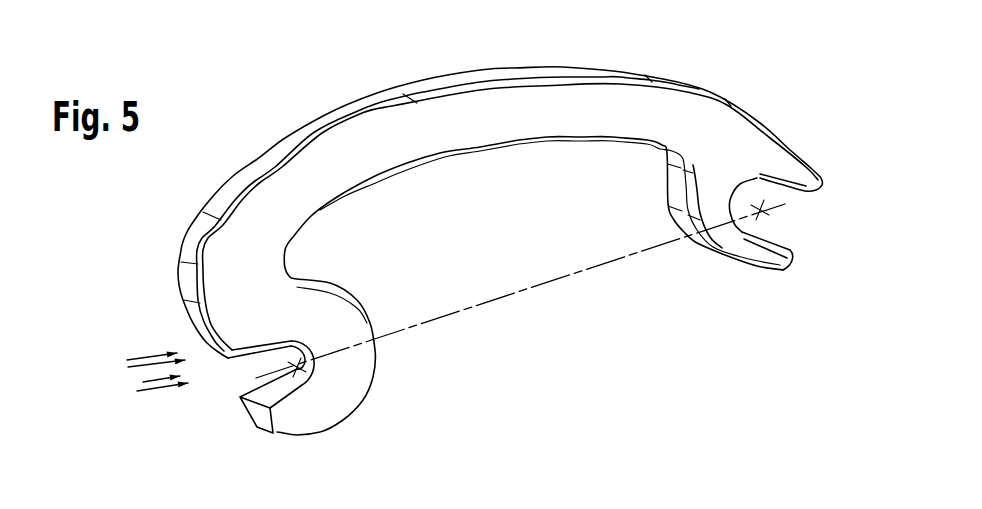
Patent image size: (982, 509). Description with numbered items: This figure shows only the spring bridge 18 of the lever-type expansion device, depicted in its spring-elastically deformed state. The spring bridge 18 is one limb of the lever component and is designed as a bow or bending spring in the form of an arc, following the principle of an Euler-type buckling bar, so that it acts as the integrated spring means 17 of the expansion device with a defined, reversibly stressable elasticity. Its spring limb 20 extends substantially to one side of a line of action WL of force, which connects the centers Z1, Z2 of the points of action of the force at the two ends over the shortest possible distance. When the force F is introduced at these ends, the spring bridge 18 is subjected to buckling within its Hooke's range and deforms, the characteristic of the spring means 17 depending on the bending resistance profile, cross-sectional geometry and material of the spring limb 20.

The spring means 17 is at (538, 56).
The spring bridge 18 is at (412, 78).
The spring limb 20 is at (490, 113).
The center Z1 is at (759, 212).
The center Z2 is at (298, 368).
The line of action WL is at (520, 290).
The force F is at (140, 380).